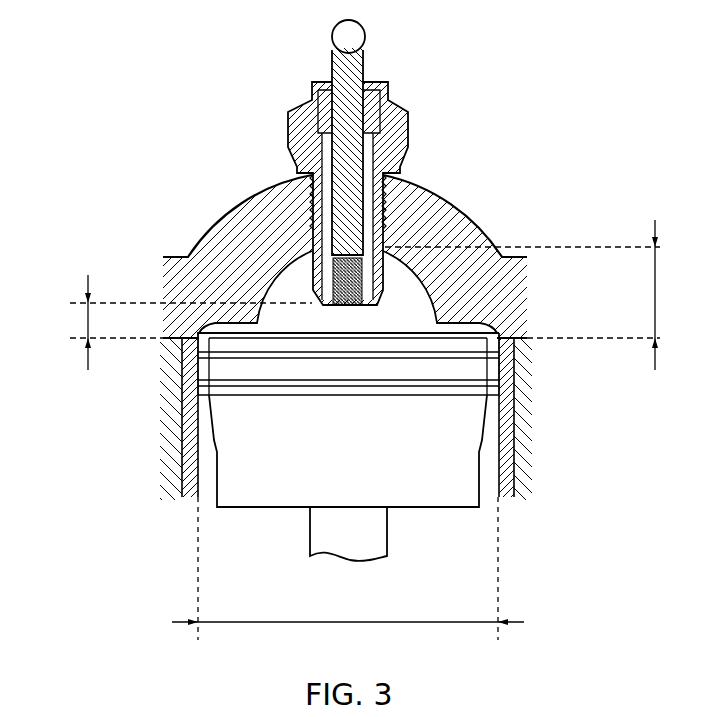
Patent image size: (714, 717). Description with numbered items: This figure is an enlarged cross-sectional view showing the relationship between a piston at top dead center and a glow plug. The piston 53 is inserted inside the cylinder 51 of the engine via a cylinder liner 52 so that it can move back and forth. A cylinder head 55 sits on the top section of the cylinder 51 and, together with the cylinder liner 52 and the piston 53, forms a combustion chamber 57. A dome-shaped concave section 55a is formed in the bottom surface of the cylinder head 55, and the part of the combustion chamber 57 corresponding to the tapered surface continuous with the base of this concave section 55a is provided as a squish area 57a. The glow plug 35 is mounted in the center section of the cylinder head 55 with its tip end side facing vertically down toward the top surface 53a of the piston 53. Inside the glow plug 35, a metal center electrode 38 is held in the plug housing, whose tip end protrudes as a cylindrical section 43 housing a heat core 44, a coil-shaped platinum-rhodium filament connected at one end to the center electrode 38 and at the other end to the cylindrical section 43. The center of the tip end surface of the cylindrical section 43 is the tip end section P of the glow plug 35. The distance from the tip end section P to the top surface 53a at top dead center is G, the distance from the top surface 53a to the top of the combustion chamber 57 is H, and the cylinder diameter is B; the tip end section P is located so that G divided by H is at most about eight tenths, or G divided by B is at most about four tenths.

The glow plug 35 is at (352, 162).
The center electrode 38 is at (362, 53).
The cylindrical section 43 is at (243, 324).
The heat core 44 is at (323, 290).
The cylinder 51 is at (523, 481).
The cylinder liner 52 is at (513, 446).
The piston 53 is at (409, 356).
The top surface of the piston 53a is at (423, 333).
The cylinder head 55 is at (382, 242).
The concave section 55a is at (423, 286).
The combustion chamber 57 is at (410, 311).
The squish area 57a is at (200, 252).
The tip end section P is at (348, 306).
The distance G is at (88, 323).
The distance H is at (663, 295).
The cylinder diameter B is at (348, 574).